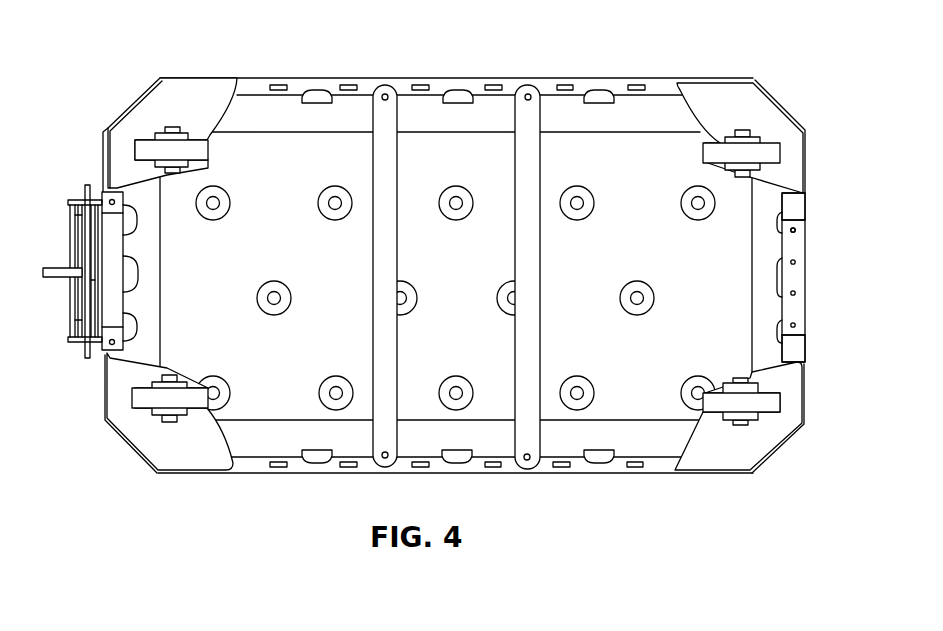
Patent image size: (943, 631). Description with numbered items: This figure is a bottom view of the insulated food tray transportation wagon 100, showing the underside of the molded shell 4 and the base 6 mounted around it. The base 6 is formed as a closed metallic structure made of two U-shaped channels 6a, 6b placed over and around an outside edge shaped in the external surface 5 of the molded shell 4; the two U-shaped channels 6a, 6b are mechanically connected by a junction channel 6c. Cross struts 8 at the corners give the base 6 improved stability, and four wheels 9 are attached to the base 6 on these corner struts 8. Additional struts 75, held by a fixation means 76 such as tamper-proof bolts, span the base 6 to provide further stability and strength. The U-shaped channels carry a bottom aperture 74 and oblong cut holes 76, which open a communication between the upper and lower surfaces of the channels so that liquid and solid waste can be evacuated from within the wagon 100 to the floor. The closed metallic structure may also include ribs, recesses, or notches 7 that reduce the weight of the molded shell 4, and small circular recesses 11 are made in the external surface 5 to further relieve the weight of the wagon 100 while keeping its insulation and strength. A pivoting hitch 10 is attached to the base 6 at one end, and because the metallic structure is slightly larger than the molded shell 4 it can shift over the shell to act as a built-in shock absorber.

The wagon 100 is at (128, 40).
The molded shell 4 is at (260, 108).
The bottom aperture 74 is at (320, 85).
The external surface 5 is at (393, 88).
The notches 7 is at (457, 92).
The cut holes 76 is at (493, 87).
The struts 75 is at (398, 170).
The circular recesses 11 is at (457, 202).
The cross struts 8 is at (767, 112).
The wheels 9 is at (200, 150).
The pivoting hitch 10 is at (70, 243).
The base 6 is at (798, 277).
The U-shaped channel 6a is at (797, 350).
The U-shaped channel 6b is at (800, 210).
The junction channel 6c is at (797, 238).